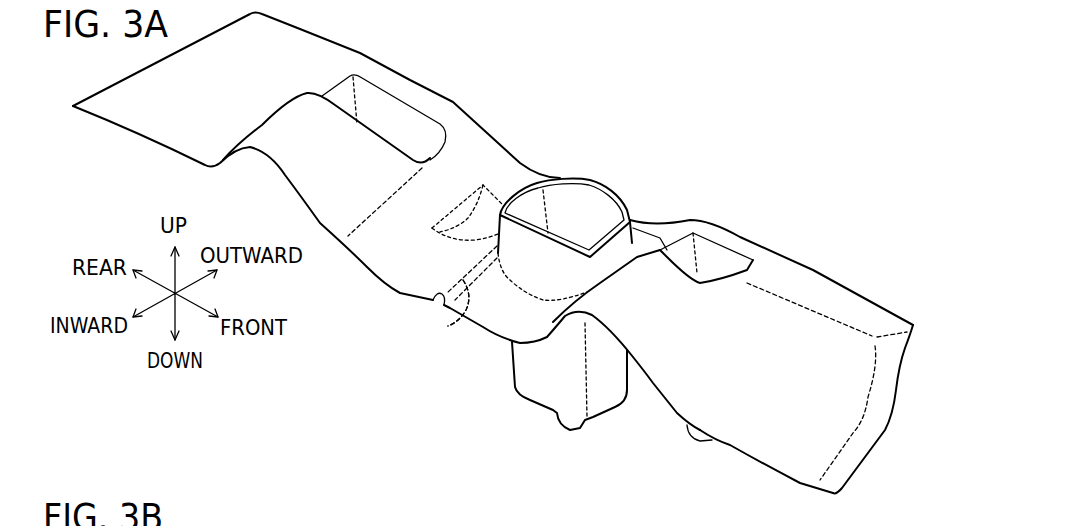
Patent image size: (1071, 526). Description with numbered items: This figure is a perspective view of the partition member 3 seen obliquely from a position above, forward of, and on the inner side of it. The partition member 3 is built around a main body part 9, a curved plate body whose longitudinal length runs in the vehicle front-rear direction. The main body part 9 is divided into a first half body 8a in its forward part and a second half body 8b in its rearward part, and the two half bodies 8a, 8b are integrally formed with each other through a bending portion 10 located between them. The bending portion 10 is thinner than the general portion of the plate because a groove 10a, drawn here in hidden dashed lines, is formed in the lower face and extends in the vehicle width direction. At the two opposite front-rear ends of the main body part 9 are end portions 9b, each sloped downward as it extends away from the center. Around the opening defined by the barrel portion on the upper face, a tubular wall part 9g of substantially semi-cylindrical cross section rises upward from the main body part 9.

The partition member 3 is at (665, 163).
The first half body 8a is at (787, 400).
The second half body 8b is at (415, 258).
The main body part 9 is at (813, 270).
The end portion 9b is at (878, 416).
The wall part 9g is at (527, 268).
The bending portion 10 is at (450, 308).
The groove 10a is at (458, 303).